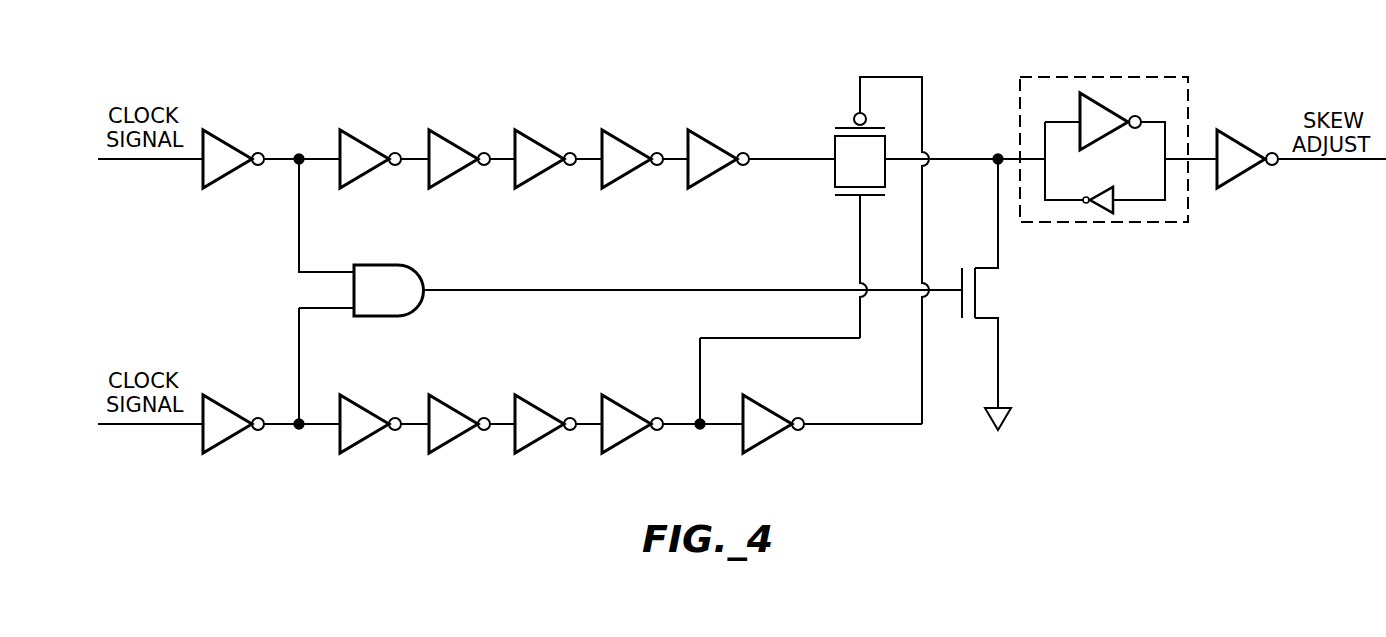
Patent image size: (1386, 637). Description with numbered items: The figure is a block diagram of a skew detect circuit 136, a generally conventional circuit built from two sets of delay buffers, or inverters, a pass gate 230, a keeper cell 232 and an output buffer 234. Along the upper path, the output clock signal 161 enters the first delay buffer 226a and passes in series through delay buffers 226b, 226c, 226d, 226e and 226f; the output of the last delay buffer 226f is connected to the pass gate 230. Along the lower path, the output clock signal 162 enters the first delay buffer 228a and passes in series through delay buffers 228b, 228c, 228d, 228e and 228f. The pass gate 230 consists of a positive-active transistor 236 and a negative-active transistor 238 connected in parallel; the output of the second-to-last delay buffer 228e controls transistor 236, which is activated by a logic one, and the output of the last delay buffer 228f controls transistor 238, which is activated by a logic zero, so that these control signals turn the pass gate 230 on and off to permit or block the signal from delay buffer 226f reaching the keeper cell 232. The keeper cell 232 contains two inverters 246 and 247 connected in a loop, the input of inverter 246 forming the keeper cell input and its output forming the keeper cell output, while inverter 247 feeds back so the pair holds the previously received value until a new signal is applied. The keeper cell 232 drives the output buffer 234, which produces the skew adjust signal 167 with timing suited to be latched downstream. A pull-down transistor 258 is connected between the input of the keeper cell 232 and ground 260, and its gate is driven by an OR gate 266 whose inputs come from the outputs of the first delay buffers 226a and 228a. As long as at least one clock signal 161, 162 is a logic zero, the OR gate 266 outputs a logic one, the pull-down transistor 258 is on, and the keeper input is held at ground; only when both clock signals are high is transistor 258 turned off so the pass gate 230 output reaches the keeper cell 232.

The skew detect circuit 136 is at (335, 47).
The output clock signal 161 is at (107, 161).
The output clock signal 162 is at (107, 426).
The skew adjust signal 167 is at (1305, 162).
The delay buffer 226a is at (218, 135).
The delay buffer 226b is at (357, 135).
The delay buffer 226c is at (445, 183).
The delay buffer 226d is at (532, 135).
The delay buffer 226e is at (618, 183).
The delay buffer 226f is at (705, 135).
The delay buffer 228a is at (220, 447).
The delay buffer 228b is at (357, 400).
The delay buffer 228c is at (445, 448).
The delay buffer 228d is at (532, 400).
The delay buffer 228e is at (618, 448).
The delay buffer 228f is at (760, 400).
The pass gate 230 is at (830, 175).
The keeper cell 232 is at (1065, 70).
The output buffer 234 is at (1237, 186).
The positive-active transistor 236 is at (847, 200).
The negative-active transistor 238 is at (847, 125).
The inverter 246 is at (1100, 100).
The inverter 247 is at (1098, 214).
The pull-down transistor 258 is at (990, 325).
The ground 260 is at (1010, 416).
The OR gate 266 is at (370, 265).